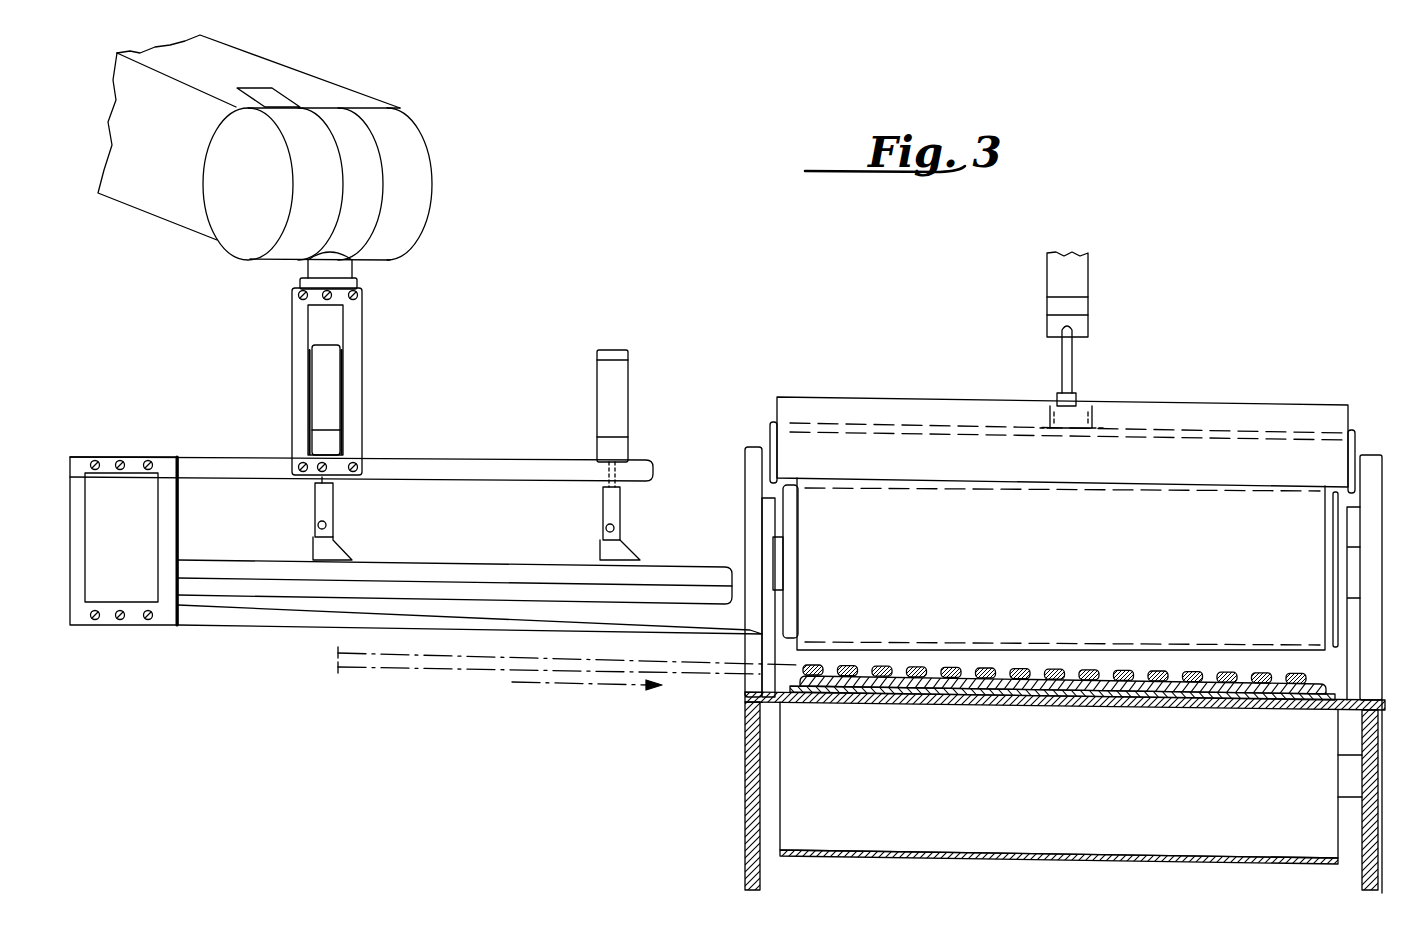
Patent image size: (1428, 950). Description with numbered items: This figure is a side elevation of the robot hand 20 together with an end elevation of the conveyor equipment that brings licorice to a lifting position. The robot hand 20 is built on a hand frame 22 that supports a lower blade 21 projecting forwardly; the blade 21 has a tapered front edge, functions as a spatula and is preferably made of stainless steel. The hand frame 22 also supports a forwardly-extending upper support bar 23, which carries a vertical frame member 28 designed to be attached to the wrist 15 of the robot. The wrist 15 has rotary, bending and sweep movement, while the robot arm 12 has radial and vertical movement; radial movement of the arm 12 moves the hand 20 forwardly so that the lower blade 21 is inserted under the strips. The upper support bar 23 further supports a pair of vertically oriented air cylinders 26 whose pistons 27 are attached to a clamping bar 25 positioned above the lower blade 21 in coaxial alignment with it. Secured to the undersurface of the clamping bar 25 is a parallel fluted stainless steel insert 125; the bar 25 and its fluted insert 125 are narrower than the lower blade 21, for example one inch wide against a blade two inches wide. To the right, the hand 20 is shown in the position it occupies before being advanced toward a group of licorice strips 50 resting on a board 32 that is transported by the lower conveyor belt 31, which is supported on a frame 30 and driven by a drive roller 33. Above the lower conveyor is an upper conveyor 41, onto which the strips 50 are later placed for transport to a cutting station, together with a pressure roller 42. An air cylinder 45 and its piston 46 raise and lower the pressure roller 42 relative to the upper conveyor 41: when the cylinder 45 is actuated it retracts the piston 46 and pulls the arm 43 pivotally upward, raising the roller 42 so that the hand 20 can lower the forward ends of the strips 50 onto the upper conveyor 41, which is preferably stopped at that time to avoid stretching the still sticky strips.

The robot arm 12 is at (163, 173).
The wrist 15 is at (413, 203).
The robot hand 20 is at (415, 549).
The lower blade 21 is at (318, 623).
The hand frame 22 is at (180, 530).
The upper support bar 23 is at (462, 467).
The clamping bar 25 is at (515, 573).
The air cylinders 26 is at (327, 388).
The pistons 27 is at (313, 480).
The vertical frame member 28 is at (353, 330).
The frame 30 is at (745, 845).
The conveyor belt 31 is at (1085, 700).
The board 32 is at (975, 700).
The drive roller 33 is at (995, 825).
The upper conveyor 41 is at (1058, 563).
The pressure roller 42 is at (898, 413).
The arm 43 is at (770, 442).
The air cylinder 45 is at (1072, 275).
The piston 46 is at (1060, 363).
The licorice strips 50 is at (1190, 672).
The fluted stainless steel insert 125 is at (667, 595).